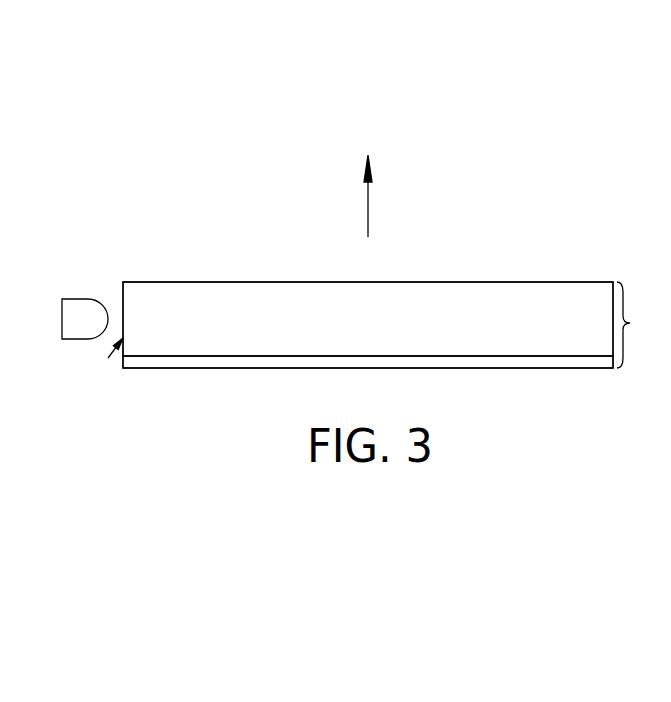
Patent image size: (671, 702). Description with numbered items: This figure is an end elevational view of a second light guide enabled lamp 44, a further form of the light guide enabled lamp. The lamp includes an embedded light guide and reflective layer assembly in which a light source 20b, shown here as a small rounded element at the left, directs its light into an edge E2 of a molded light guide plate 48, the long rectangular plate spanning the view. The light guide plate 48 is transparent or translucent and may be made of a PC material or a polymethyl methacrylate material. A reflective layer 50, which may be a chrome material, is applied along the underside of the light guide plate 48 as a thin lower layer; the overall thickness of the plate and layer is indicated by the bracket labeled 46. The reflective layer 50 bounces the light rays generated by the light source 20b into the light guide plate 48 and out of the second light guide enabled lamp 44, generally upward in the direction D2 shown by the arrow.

The second light guide enabled lamp 44 is at (487, 241).
The thickness 46 is at (640, 325).
The molded light guide plate 48 is at (247, 325).
The reflective layer 50 is at (500, 362).
The light source 20b is at (83, 311).
The edge E2 is at (108, 358).
The direction D2 is at (382, 196).